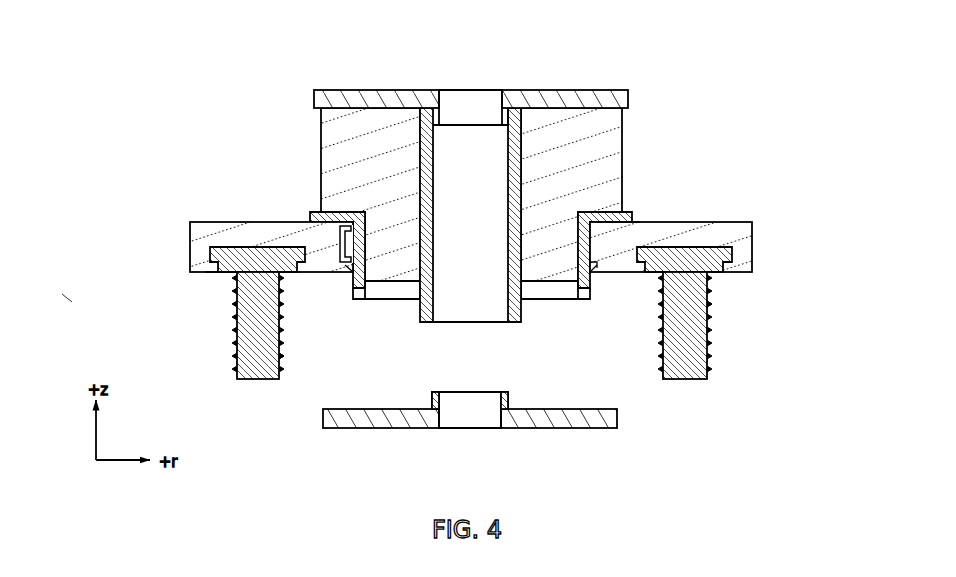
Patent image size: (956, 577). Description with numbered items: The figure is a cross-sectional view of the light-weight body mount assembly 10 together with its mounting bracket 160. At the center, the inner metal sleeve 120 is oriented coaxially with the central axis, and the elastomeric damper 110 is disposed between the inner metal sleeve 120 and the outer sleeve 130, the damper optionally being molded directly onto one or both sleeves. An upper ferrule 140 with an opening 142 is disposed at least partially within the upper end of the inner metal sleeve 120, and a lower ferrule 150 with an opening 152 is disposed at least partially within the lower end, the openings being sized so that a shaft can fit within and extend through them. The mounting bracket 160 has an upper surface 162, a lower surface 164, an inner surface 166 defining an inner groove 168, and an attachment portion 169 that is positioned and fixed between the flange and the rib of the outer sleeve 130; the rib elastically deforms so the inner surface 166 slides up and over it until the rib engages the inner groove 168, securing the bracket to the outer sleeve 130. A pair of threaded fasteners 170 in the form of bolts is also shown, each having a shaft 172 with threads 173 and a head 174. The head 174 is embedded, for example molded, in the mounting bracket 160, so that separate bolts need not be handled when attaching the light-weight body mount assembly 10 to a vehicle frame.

The light-weight body mount assembly 10 is at (708, 55).
The elastomeric damper 110 is at (320, 148).
The inner metal sleeve 120 is at (419, 307).
The outer sleeve 130 is at (633, 215).
The upper ferrule 140 is at (560, 85).
The opening 142 is at (482, 85).
The lower ferrule 150 is at (560, 430).
The opening 152 is at (467, 430).
The mounting bracket 160 is at (737, 218).
The upper surface 162 is at (203, 222).
The lower surface 164 is at (207, 273).
The inner surface 166 is at (597, 256).
The inner groove 168 is at (592, 264).
The attachment portion 169 is at (340, 243).
The threaded fastener 170 is at (231, 325).
The shaft 172 is at (289, 343).
The threads 173 is at (282, 360).
The head 174 is at (222, 255).